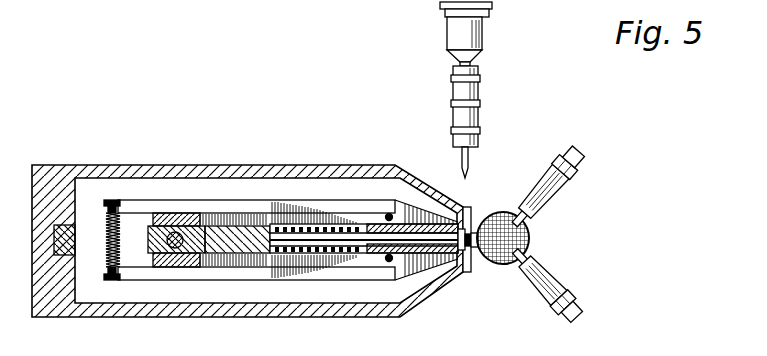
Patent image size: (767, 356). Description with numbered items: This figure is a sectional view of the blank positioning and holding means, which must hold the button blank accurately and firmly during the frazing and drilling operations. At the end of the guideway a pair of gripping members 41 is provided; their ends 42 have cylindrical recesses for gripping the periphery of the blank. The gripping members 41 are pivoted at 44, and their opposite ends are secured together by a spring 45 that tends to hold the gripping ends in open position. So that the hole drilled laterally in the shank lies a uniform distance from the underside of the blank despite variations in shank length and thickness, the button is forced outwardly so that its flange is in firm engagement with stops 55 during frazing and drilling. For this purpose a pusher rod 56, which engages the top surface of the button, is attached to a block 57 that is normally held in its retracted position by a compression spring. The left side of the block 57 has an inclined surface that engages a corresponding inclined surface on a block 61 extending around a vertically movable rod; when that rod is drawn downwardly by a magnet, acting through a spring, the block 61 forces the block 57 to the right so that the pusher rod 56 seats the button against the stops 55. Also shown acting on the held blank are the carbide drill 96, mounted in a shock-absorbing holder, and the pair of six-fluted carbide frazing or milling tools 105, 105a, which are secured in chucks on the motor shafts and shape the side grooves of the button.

The gripping members 41 is at (290, 200).
The ends of gripping members 42 is at (467, 268).
The pivot 44 is at (390, 217).
The spring 45 is at (133, 213).
The stops 55 is at (473, 258).
The pusher rod 56 is at (365, 245).
The block 57 is at (201, 218).
The block 61 is at (150, 250).
The carbide drill 96 is at (470, 150).
The frazing tool 105 is at (528, 265).
The frazing tool 105a is at (502, 218).